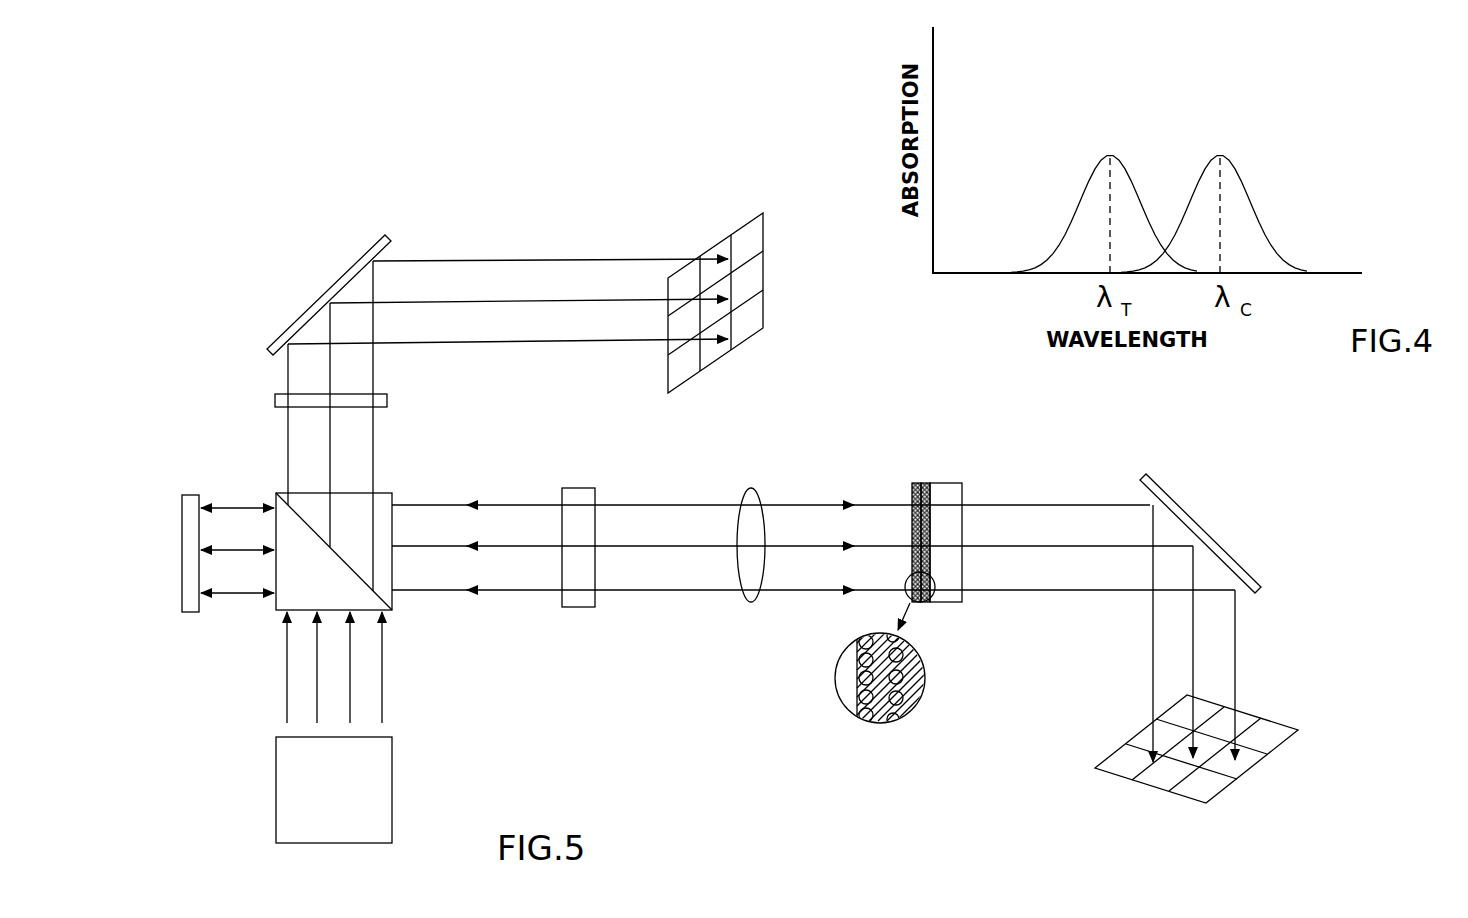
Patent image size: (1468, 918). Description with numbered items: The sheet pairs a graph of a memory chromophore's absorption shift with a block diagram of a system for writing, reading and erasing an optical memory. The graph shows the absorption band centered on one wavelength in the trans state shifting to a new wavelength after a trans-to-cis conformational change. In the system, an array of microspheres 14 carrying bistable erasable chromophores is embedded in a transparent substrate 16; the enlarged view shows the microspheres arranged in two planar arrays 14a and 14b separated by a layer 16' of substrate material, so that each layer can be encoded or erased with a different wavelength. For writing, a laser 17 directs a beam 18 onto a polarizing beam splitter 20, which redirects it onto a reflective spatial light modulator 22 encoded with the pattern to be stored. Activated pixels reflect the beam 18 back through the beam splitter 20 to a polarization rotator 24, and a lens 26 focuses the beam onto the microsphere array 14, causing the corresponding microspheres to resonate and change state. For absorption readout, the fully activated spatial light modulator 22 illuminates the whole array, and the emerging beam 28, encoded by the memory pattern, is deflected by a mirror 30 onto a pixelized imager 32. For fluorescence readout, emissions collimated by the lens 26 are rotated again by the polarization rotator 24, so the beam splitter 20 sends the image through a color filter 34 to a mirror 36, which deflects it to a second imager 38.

The array of microspheres 14 is at (916, 470).
The first planar array of microspheres 14a is at (846, 716).
The second planar array of microspheres 14b is at (900, 730).
The substrate 16 is at (968, 516).
The substrate layer 16' is at (877, 728).
The laser 17 is at (276, 790).
The beam 18 is at (287, 660).
The polarizing beam splitter 20 is at (272, 462).
The reflective spatial light modulator 22 is at (182, 565).
The 45° polarization rotator 24 is at (575, 608).
The lens 26 is at (748, 488).
The beam emerging from the microsphere array 28 is at (1108, 494).
The mirror 30 is at (1195, 520).
The imager 32 is at (1247, 773).
The color filter 34 is at (388, 396).
The mirror 36 is at (342, 272).
The imager 38 is at (722, 240).